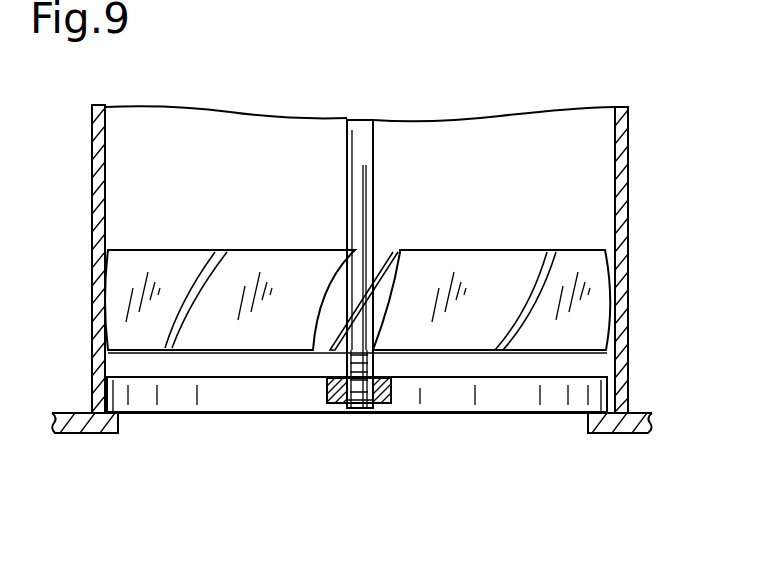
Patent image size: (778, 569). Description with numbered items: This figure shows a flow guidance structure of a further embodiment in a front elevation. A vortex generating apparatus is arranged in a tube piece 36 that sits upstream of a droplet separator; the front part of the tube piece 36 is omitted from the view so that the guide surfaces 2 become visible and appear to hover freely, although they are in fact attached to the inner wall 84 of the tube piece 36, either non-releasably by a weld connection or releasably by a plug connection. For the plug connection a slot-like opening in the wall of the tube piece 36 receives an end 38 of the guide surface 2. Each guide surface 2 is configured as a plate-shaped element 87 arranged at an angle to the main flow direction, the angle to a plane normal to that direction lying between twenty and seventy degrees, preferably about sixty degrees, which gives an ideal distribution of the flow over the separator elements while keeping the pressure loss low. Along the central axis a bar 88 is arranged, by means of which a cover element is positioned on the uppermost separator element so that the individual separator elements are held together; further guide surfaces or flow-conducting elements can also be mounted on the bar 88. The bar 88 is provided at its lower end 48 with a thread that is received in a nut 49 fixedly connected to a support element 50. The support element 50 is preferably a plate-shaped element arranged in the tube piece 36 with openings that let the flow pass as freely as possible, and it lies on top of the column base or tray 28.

The guide surface 2 is at (478, 262).
The column base or tray 28 is at (640, 437).
The tube piece 36 is at (620, 201).
The end of the guide surface 38 is at (505, 350).
The lower end 48 is at (358, 408).
The nut 49 is at (330, 403).
The support element 50 is at (138, 402).
The inner wall 84 is at (105, 232).
The plate-shaped element 87 is at (513, 262).
The bar 88 is at (362, 143).